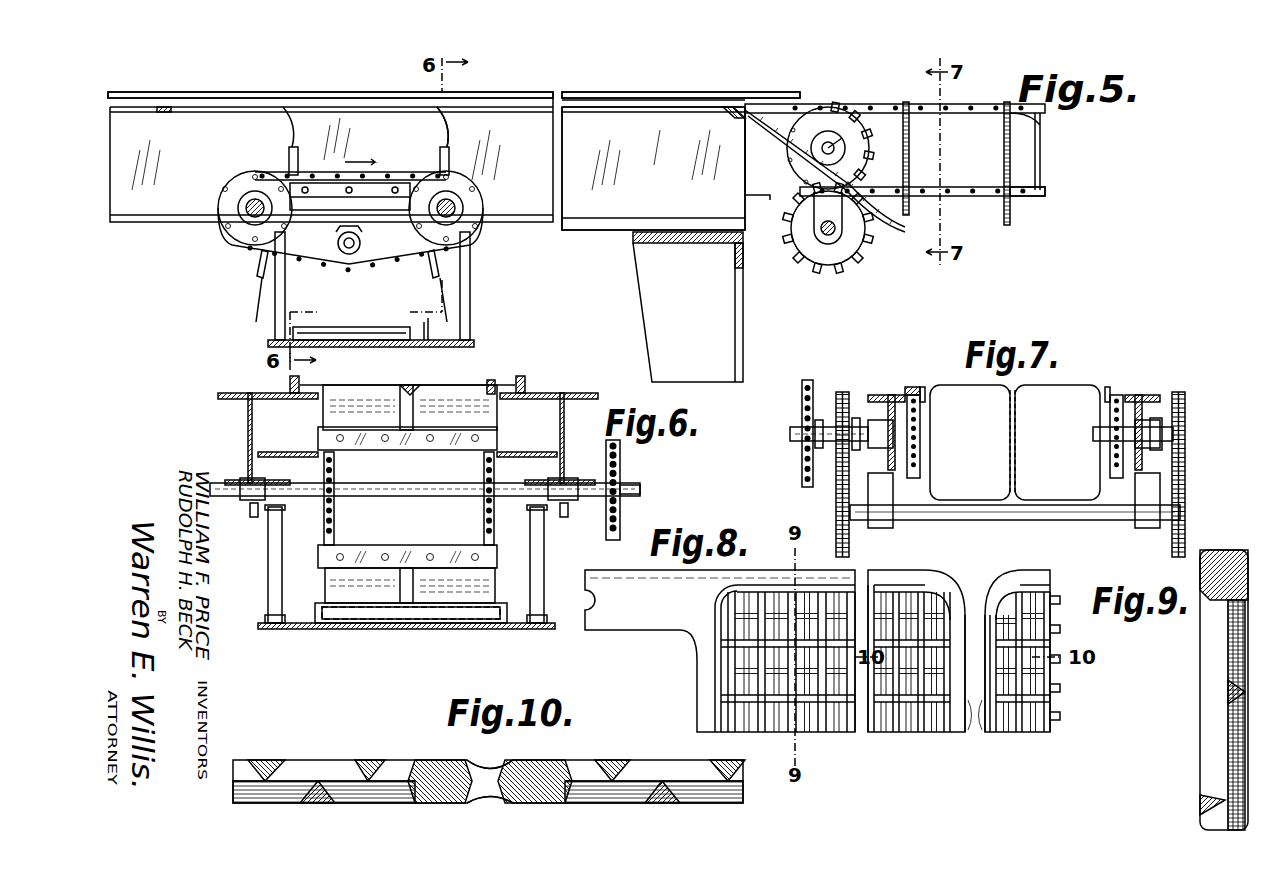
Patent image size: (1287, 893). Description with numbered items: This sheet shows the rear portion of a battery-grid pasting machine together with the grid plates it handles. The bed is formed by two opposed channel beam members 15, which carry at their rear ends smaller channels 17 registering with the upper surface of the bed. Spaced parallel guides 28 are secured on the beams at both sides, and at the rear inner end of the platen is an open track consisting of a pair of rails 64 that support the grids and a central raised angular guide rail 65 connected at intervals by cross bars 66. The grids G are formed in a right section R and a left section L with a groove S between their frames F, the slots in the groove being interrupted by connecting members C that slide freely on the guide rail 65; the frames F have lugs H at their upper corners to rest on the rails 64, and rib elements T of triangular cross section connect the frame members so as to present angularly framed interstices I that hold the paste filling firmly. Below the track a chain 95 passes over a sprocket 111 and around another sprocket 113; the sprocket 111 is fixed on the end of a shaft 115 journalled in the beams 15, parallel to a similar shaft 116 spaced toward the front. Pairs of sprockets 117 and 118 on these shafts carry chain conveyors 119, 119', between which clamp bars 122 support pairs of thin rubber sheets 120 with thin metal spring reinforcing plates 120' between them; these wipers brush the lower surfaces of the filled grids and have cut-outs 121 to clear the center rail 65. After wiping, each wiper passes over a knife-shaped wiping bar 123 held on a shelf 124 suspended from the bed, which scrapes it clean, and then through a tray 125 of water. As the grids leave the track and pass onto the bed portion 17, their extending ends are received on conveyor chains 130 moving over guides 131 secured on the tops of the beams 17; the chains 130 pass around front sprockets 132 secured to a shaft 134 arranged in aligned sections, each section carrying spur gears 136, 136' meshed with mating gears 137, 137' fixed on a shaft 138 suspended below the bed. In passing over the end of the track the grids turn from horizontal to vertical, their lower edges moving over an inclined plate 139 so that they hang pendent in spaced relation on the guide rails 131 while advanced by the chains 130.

In FIG. 5, the channel beam members 15 is at (653, 168).
In FIG. 6, the channel beam members 15 is at (247, 425).
In FIG. 5, the smaller channels 17 is at (966, 145).
In FIG. 7, the smaller channels 17 is at (888, 462).
In FIG. 5, the guides 28 is at (590, 80).
In FIG. 6, the guides 28 is at (288, 387).
In FIG. 6, the rails 64 is at (308, 400).
In FIG. 5, the guide rail 65 is at (612, 108).
In FIG. 6, the guide rail 65 is at (424, 376).
In FIG. 5, the cross bars 66 is at (160, 114).
In FIG. 6, the cross bars 66 is at (493, 380).
In FIG. 7, the chain 95 is at (803, 382).
In FIG. 6, the sprocket 111 is at (626, 506).
In FIG. 7, the sprocket 113 is at (800, 434).
In FIG. 5, the shaft 115 is at (458, 211).
In FIG. 6, the shaft 115 is at (412, 492).
In FIG. 5, the shaft 116 is at (253, 200).
In FIG. 5, the sprockets 117 is at (448, 190).
In FIG. 6, the sprockets 117 is at (326, 474).
In FIG. 5, the sprockets 118 is at (232, 208).
In FIG. 6, the chain conveyor 119 is at (514, 526).
In FIG. 5, the chain conveyor 119' is at (371, 214).
In FIG. 6, the chain conveyor 119' is at (305, 533).
In FIG. 5, the rubber sheets 120 is at (331, 218).
In FIG. 6, the rubber sheets 120 is at (410, 503).
In FIG. 5, the spring reinforcing plates 120' is at (467, 127).
In FIG. 6, the cut-outs 121 is at (400, 420).
In FIG. 5, the clamp bars 122 is at (289, 153).
In FIG. 6, the clamp bars 122 is at (385, 452).
In FIG. 5, the wiping bar 123 is at (432, 332).
In FIG. 6, the wiping bar 123 is at (492, 610).
In FIG. 5, the shelf 124 is at (440, 346).
In FIG. 6, the shelf 124 is at (338, 630).
In FIG. 5, the tray 125 is at (378, 318).
In FIG. 6, the tray 125 is at (462, 620).
In FIG. 5, the conveyor chains 130 is at (1037, 198).
In FIG. 7, the conveyor chains 130 is at (912, 387).
In FIG. 5, the guides 131 is at (1037, 118).
In FIG. 7, the guides 131 is at (945, 390).
In FIG. 5, the sprocket 132 is at (858, 160).
In FIG. 7, the sprocket 132 is at (921, 456).
In FIG. 5, the shaft 134 is at (842, 141).
In FIG. 7, the shaft 134 is at (864, 388).
In FIG. 7, the spur gear 136 is at (815, 421).
In FIG. 7, the spur gear 136' is at (1206, 422).
In FIG. 7, the gear 137 is at (817, 513).
In FIG. 5, the gear 137' is at (828, 243).
In FIG. 7, the gear 137' is at (1206, 513).
In FIG. 5, the shaft 138 is at (820, 240).
In FIG. 7, the shaft 138 is at (1000, 521).
In FIG. 5, the inclined plate 139 is at (890, 234).
In FIG. 5, the grid G is at (260, 92).
In FIG. 6, the grid G is at (360, 385).
In FIG. 7, the grid G is at (1038, 389).
In FIG. 8, the grid G is at (964, 740).
In FIG. 7, the left section L is at (970, 442).
In FIG. 8, the left section L is at (697, 678).
In FIG. 10, the left section L is at (303, 754).
In FIG. 7, the right section R is at (1057, 442).
In FIG. 8, the right section R is at (1052, 629).
In FIG. 10, the right section R is at (658, 754).
In FIG. 8, the frames F is at (897, 580).
In FIG. 9, the frames F is at (1228, 560).
In FIG. 10, the frames F is at (437, 762).
In FIG. 8, the connecting members C is at (973, 602).
In FIG. 10, the connecting members C is at (485, 772).
In FIG. 8, the groove S is at (976, 702).
In FIG. 10, the groove S is at (493, 801).
In FIG. 8, the rib elements T is at (822, 722).
In FIG. 9, the rib elements T is at (1212, 800).
In FIG. 10, the rib elements T is at (372, 762).
In FIG. 8, the interstices I is at (917, 714).
In FIG. 9, the interstices I is at (1218, 645).
In FIG. 10, the interstices I is at (654, 795).
In FIG. 8, the lugs H is at (627, 630).